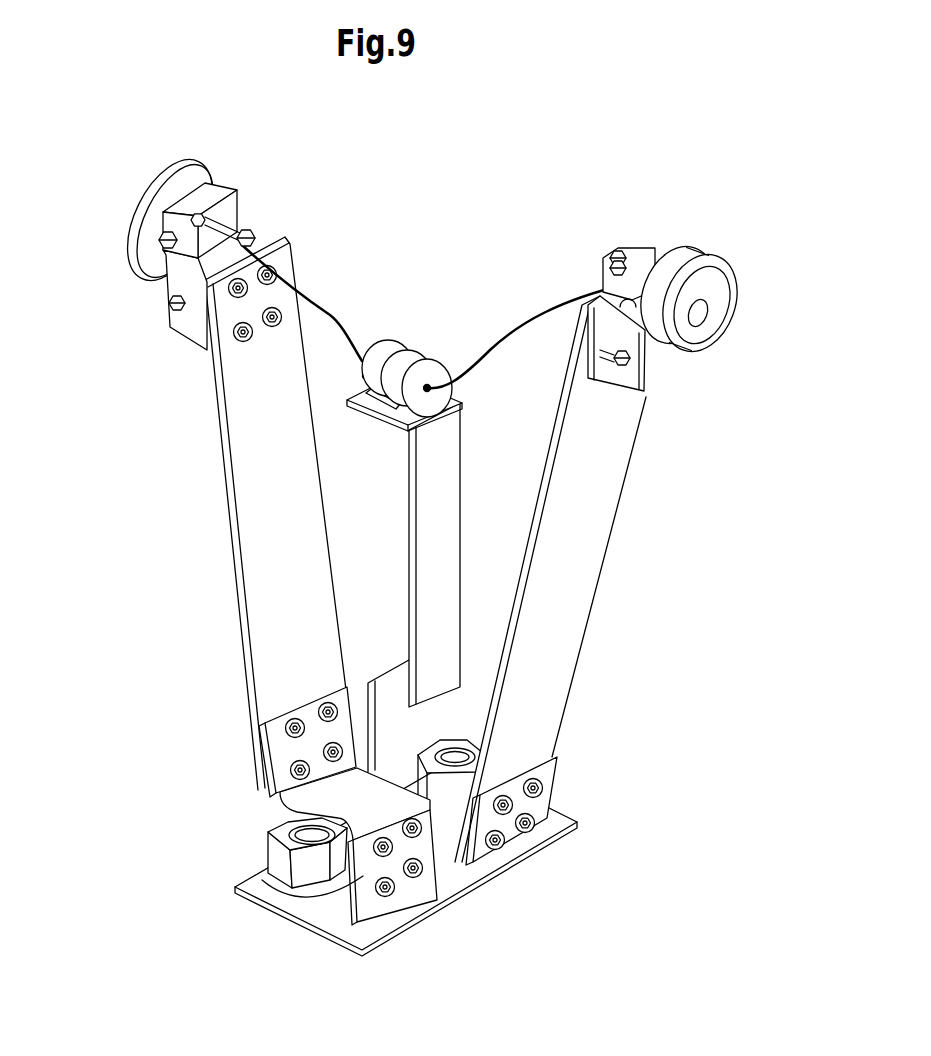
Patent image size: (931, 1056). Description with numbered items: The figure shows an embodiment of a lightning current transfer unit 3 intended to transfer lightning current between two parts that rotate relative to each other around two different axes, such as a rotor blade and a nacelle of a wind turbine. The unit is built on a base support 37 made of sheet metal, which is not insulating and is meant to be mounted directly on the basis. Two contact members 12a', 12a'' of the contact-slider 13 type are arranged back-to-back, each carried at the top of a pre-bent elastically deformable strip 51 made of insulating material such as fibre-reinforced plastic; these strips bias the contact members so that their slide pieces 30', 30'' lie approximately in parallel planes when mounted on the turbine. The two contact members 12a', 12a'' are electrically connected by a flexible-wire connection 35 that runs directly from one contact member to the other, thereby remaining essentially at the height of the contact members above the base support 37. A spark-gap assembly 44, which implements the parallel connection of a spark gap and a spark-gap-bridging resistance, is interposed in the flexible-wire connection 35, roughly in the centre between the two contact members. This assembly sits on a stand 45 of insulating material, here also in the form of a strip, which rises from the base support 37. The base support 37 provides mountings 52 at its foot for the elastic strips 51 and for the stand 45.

The lightning current transfer unit 3 is at (519, 160).
The slide piece 30' is at (170, 184).
The slide piece 30'' is at (695, 259).
The flexible-wire connection 35 is at (332, 313).
The spark-gap assembly 44 is at (407, 340).
The stand 45 is at (443, 517).
The elastically deformable strips 51 is at (250, 568).
The mountings 52 is at (367, 867).
The base support 37 is at (460, 877).
The contact member 12a' is at (165, 298).
The contact member 12a'' is at (682, 357).
The contact-slider 13 is at (426, 325).